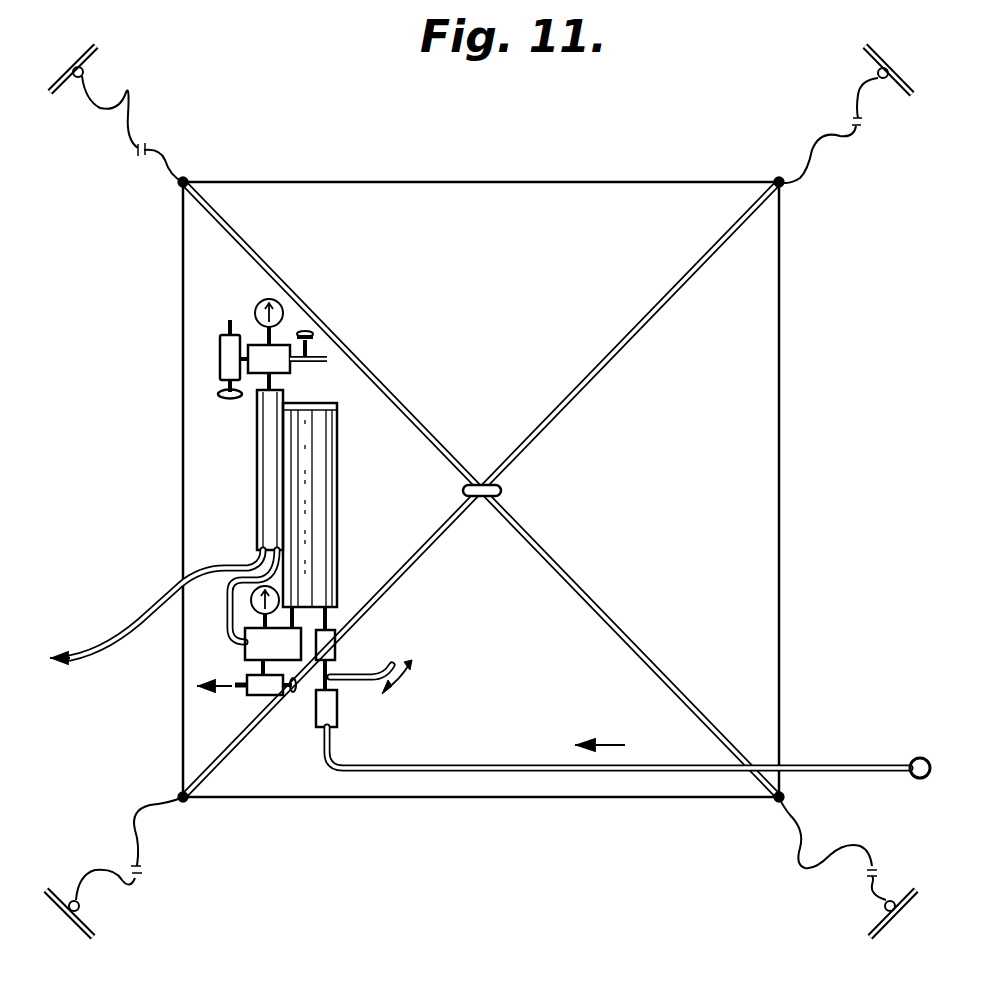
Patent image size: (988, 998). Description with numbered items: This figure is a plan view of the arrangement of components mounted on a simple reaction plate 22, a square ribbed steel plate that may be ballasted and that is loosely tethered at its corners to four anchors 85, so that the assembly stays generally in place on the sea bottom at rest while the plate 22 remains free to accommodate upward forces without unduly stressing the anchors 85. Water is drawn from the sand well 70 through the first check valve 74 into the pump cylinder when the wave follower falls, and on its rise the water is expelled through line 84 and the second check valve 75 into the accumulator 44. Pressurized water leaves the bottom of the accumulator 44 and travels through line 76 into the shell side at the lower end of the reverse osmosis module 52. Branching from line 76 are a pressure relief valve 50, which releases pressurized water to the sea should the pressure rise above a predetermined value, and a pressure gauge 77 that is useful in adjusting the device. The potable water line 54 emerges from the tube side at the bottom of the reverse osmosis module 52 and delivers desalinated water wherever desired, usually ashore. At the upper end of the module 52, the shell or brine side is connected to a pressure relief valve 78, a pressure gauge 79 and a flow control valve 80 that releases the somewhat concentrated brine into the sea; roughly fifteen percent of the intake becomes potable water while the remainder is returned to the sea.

The reaction plate 22 is at (760, 560).
The anchors 85 is at (88, 56).
The pressure gauge 79 is at (258, 315).
The pressure relief valve 78 is at (224, 362).
The flow control valve 80 is at (308, 345).
The reverse osmosis module 52 is at (262, 468).
The accumulator 44 is at (320, 497).
The potable water line 54 is at (170, 617).
The line 76 is at (244, 645).
The pressure gauge 77 is at (255, 608).
The pressure relief valve 50 is at (255, 697).
The second check valve 75 is at (332, 640).
The line 84 is at (385, 672).
The first check valve 74 is at (337, 716).
The sand well 70 is at (920, 757).